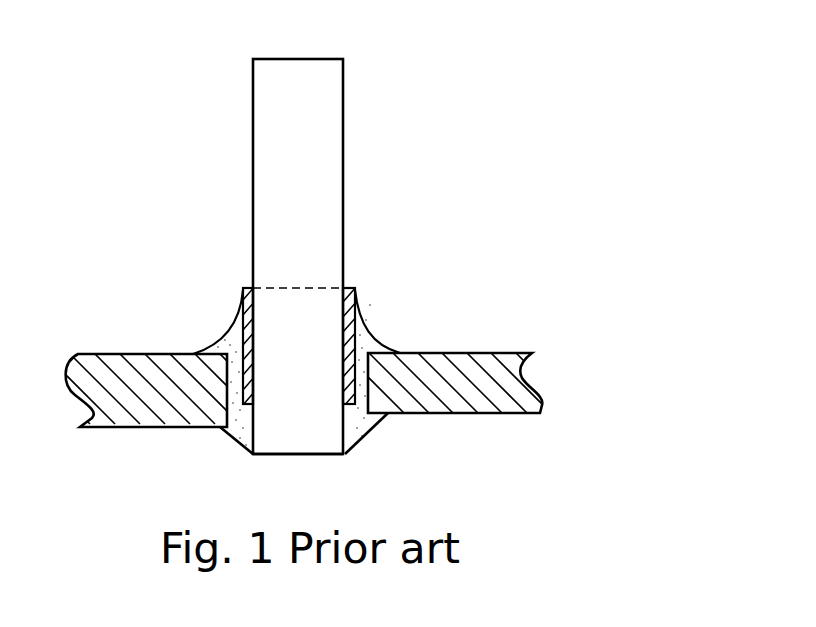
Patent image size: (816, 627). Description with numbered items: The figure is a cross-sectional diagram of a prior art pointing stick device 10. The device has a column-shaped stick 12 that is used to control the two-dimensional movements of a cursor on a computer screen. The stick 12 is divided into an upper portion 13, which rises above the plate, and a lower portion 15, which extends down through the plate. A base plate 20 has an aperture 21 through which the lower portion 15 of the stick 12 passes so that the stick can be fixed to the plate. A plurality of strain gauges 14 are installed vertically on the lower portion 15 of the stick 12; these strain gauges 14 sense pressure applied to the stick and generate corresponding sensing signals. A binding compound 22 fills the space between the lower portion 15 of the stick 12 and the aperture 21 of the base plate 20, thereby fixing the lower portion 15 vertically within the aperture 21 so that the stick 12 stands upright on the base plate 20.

The pointing stick device 10 is at (120, 85).
The column-shaped stick 12 is at (343, 97).
The upper portion 13 is at (317, 197).
The strain gauges 14 is at (349, 288).
The lower portion 15 is at (317, 378).
The base plate 20 is at (443, 370).
The aperture 21 is at (233, 348).
The binding compound 22 is at (367, 337).